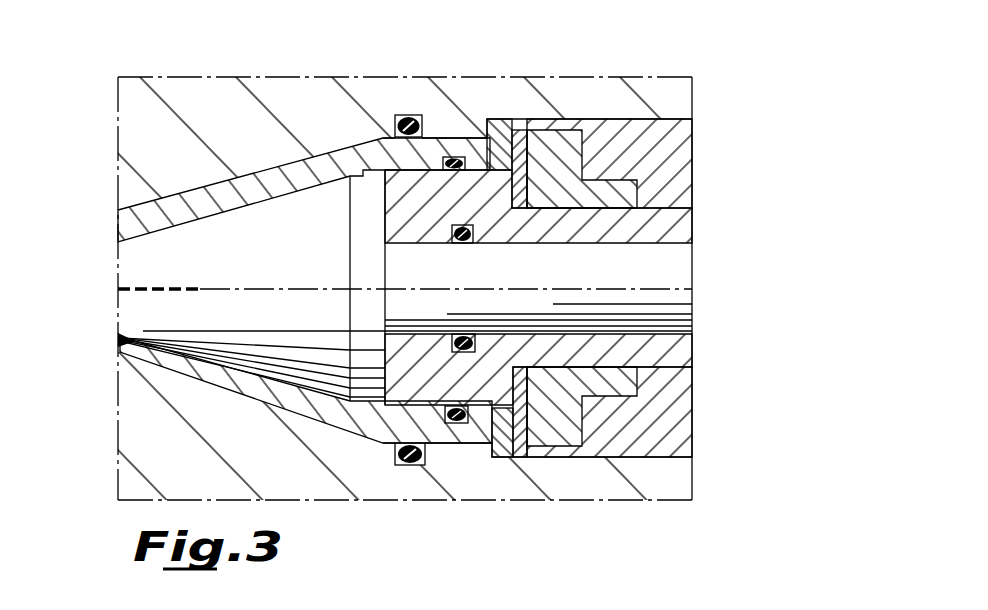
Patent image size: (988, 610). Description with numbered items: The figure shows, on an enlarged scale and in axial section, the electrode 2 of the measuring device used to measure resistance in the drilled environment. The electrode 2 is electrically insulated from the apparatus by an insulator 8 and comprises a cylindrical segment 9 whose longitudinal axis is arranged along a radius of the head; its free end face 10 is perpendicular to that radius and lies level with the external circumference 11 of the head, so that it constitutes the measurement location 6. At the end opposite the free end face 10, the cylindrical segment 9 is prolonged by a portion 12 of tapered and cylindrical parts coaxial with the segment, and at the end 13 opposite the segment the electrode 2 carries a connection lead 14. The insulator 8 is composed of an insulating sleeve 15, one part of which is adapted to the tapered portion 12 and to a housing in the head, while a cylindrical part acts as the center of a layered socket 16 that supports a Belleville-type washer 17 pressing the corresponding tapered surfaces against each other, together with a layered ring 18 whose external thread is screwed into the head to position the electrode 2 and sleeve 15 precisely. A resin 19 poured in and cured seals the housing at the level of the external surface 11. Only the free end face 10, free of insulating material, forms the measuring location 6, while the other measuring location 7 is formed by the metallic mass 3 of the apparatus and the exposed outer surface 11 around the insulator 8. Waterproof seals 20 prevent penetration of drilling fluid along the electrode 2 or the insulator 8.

The electrode 2 is at (693, 319).
The metallic mass 3 is at (673, 95).
The measurement location 6 is at (713, 301).
The measuring location 7 is at (721, 427).
The insulator 8 is at (716, 169).
The cylindrical segment 9 is at (693, 335).
The free end face 10 is at (693, 265).
The external circumference 11 is at (718, 486).
The tapered portion 12 is at (120, 351).
The end 13 is at (118, 310).
The connection lead 14 is at (153, 287).
The insulating sleeve 15 is at (225, 383).
The layered socket 16 is at (673, 223).
The washer 17 is at (516, 452).
The layered ring 18 is at (568, 143).
The resin 19 is at (678, 148).
The sealing rings 20 is at (466, 226).